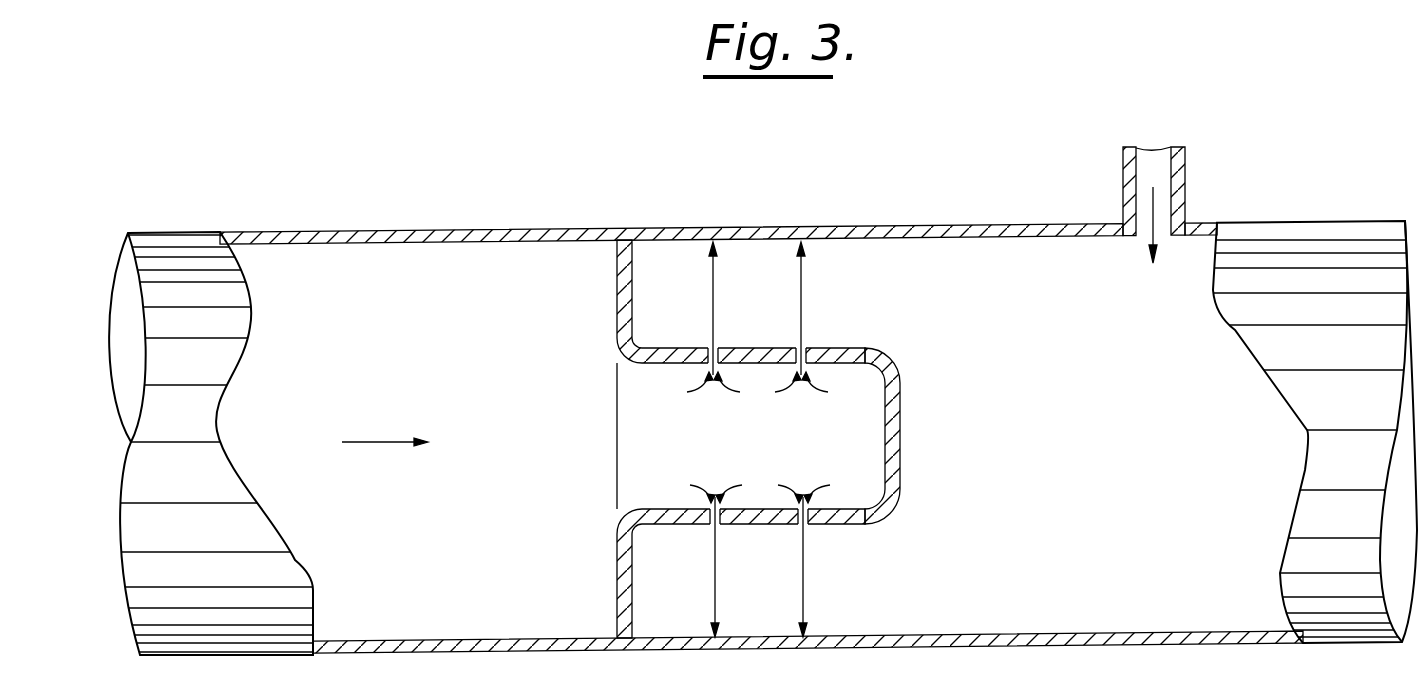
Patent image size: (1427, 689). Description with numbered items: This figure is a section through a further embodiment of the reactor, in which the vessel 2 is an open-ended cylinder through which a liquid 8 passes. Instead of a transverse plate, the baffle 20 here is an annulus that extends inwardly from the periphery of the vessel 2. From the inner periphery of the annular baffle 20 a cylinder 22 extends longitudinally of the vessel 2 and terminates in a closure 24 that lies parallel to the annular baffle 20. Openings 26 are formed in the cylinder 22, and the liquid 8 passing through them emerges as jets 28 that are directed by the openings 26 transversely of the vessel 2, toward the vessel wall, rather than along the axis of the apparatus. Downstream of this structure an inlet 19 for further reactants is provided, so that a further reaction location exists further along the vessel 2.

The vessel 2 is at (502, 229).
The liquid 8 is at (448, 367).
The inlet for further reactants 19 is at (1168, 165).
The baffle 20 is at (634, 278).
The cylinder 22 is at (843, 528).
The closure 24 is at (900, 437).
The openings 26 is at (719, 350).
The jets 28 is at (714, 286).